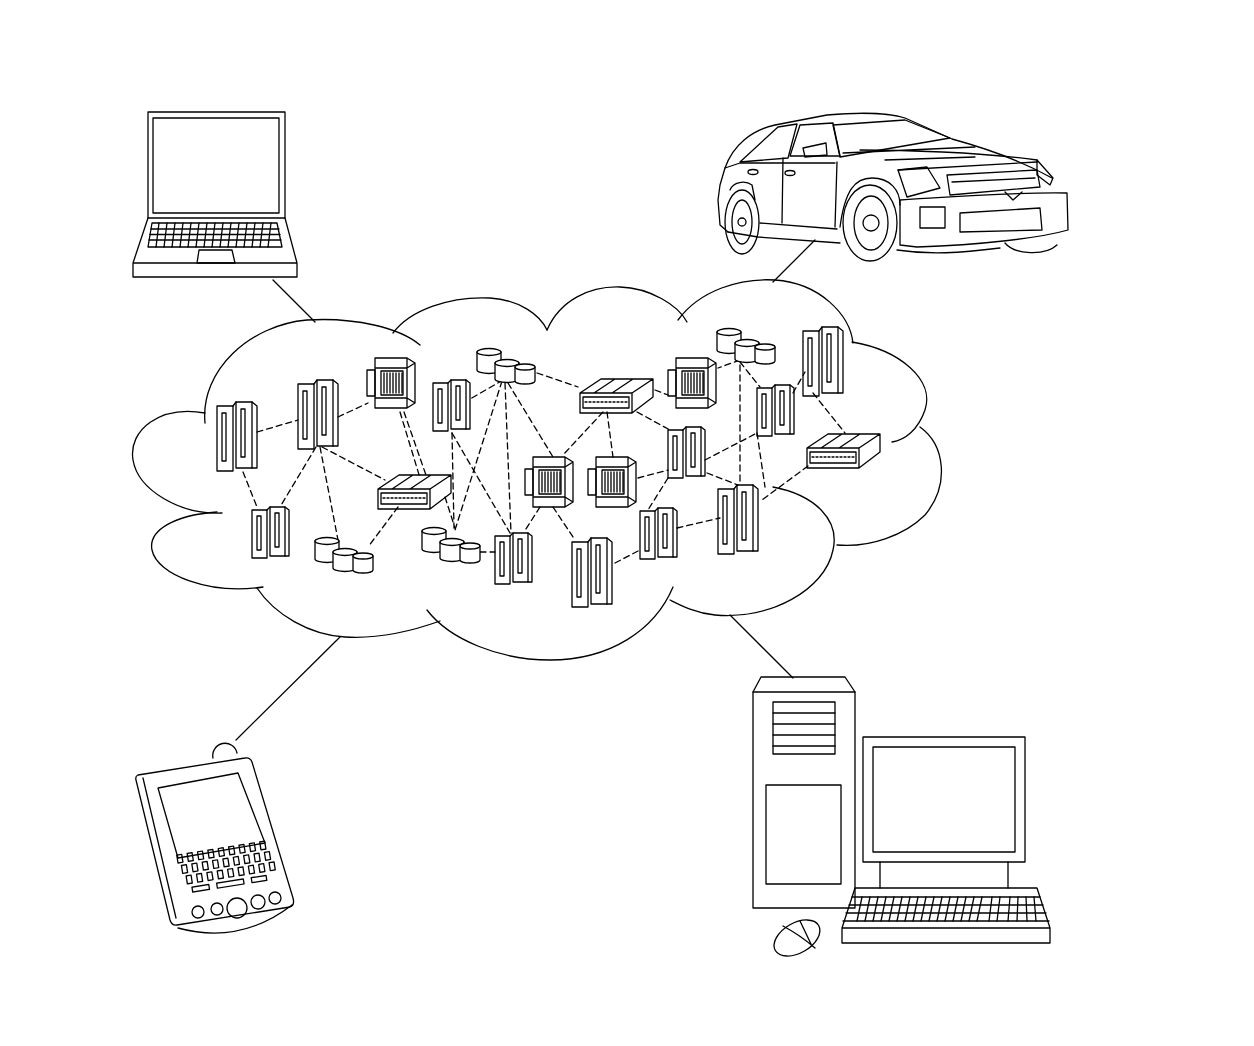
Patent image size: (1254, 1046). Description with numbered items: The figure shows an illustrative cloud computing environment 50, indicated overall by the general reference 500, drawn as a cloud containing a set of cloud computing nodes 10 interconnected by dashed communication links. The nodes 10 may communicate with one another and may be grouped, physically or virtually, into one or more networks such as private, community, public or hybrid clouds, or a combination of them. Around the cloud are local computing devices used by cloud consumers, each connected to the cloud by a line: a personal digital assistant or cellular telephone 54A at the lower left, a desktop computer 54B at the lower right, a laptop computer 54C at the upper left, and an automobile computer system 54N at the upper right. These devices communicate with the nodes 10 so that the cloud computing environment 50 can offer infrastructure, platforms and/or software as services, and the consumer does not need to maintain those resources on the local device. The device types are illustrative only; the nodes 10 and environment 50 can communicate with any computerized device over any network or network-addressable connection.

The cloud computing environment 500 is at (1097, 100).
The cloud computing environment 50 is at (938, 447).
The cloud computing node 10 is at (883, 477).
The personal digital assistant (PDA) or cellular telephone 54A is at (272, 828).
The desktop computer 54B is at (942, 736).
The laptop computer 54C is at (286, 173).
The automobile computer system 54N is at (722, 189).